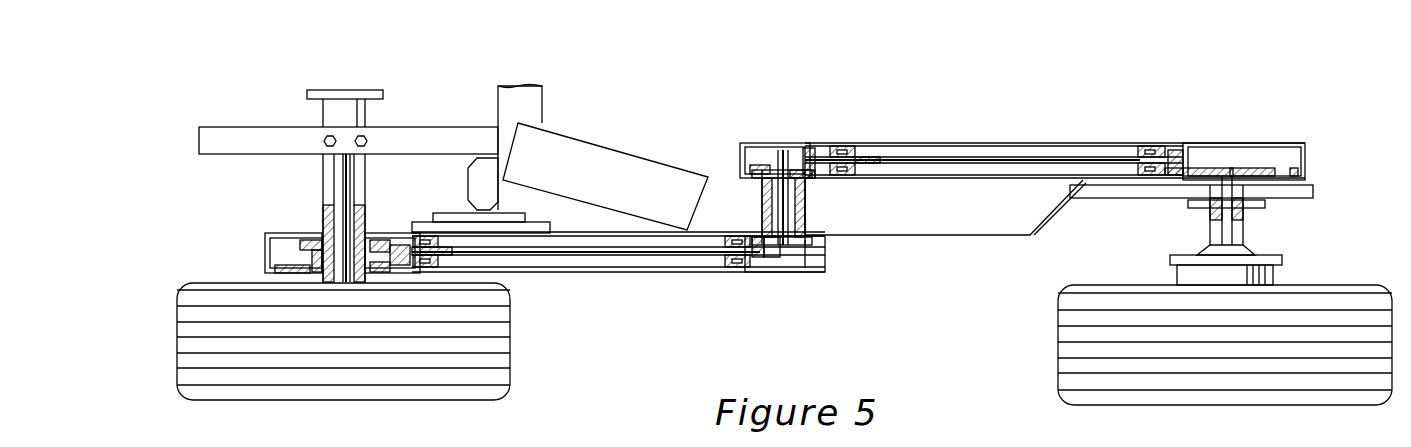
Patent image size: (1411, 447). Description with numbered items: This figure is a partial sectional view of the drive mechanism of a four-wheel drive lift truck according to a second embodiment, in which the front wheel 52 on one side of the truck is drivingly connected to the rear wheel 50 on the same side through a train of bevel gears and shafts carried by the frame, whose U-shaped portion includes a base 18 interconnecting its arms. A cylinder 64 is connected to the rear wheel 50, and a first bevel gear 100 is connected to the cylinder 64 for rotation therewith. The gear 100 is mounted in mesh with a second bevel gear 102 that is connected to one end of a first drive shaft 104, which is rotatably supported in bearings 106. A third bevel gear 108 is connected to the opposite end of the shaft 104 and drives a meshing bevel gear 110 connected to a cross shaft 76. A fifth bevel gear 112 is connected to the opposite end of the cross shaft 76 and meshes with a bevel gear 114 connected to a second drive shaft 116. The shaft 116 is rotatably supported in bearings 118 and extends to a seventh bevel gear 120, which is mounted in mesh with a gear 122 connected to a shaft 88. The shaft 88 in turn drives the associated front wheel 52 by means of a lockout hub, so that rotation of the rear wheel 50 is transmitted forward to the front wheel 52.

The base 18 is at (527, 112).
The rear wheel 50 is at (500, 376).
The front wheel 52 is at (1070, 365).
The cylinder 64 is at (378, 283).
The cross shaft 76 is at (919, 197).
The shaft 88 is at (1232, 213).
The first bevel gear 100 is at (288, 235).
The second bevel gear 102 is at (398, 237).
The first drive shaft 104 is at (590, 258).
The bearings 106 is at (425, 235).
The third bevel gear 108 is at (762, 258).
The bevel gear 110 is at (823, 259).
The fifth bevel gear 112 is at (752, 166).
The bevel gear 114 is at (803, 155).
The second drive shaft 116 is at (948, 158).
The bearings 118 is at (843, 143).
The seventh bevel gear 120 is at (1178, 150).
The gear 122 is at (1273, 172).